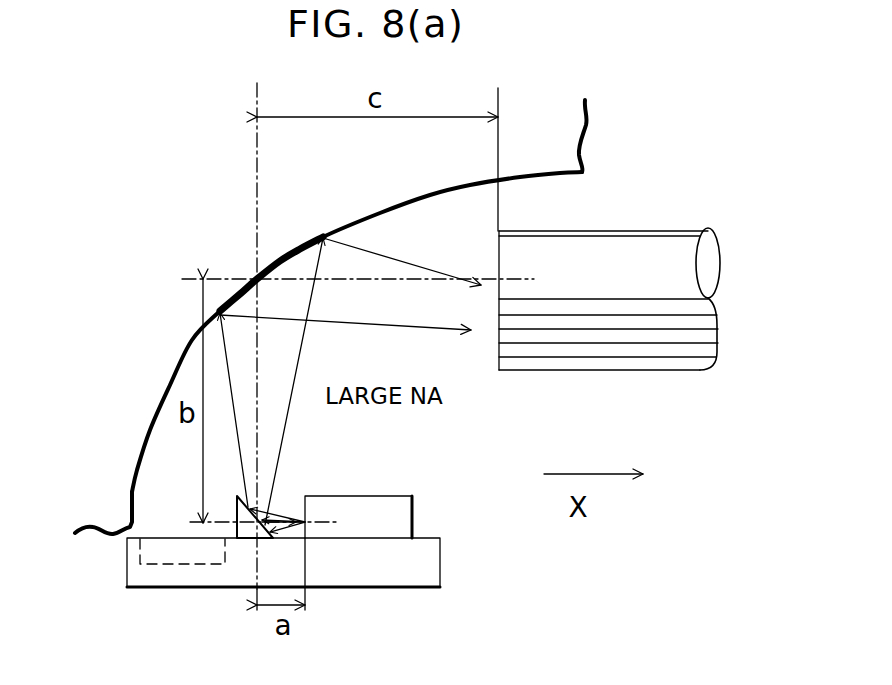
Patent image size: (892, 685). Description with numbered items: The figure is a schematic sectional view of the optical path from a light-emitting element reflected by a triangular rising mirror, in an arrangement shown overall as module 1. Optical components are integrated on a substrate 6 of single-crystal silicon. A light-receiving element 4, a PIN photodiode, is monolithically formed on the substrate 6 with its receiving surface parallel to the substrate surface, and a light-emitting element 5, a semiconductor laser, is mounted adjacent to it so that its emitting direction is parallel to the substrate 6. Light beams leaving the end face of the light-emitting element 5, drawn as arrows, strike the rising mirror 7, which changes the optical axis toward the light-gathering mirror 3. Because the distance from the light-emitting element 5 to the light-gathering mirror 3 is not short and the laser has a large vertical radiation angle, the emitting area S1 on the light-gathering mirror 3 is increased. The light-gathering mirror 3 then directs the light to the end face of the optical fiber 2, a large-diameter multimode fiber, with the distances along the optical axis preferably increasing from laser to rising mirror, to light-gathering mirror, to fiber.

The optical module 1 is at (343, 374).
The optical fiber 2 is at (631, 347).
The light-gathering mirror 3 is at (331, 358).
The light-receiving element 4 is at (182, 562).
The light-emitting element 5 is at (395, 519).
The substrate 6 is at (357, 569).
The rising mirror 7 is at (250, 532).
The emitting area S1 is at (243, 287).